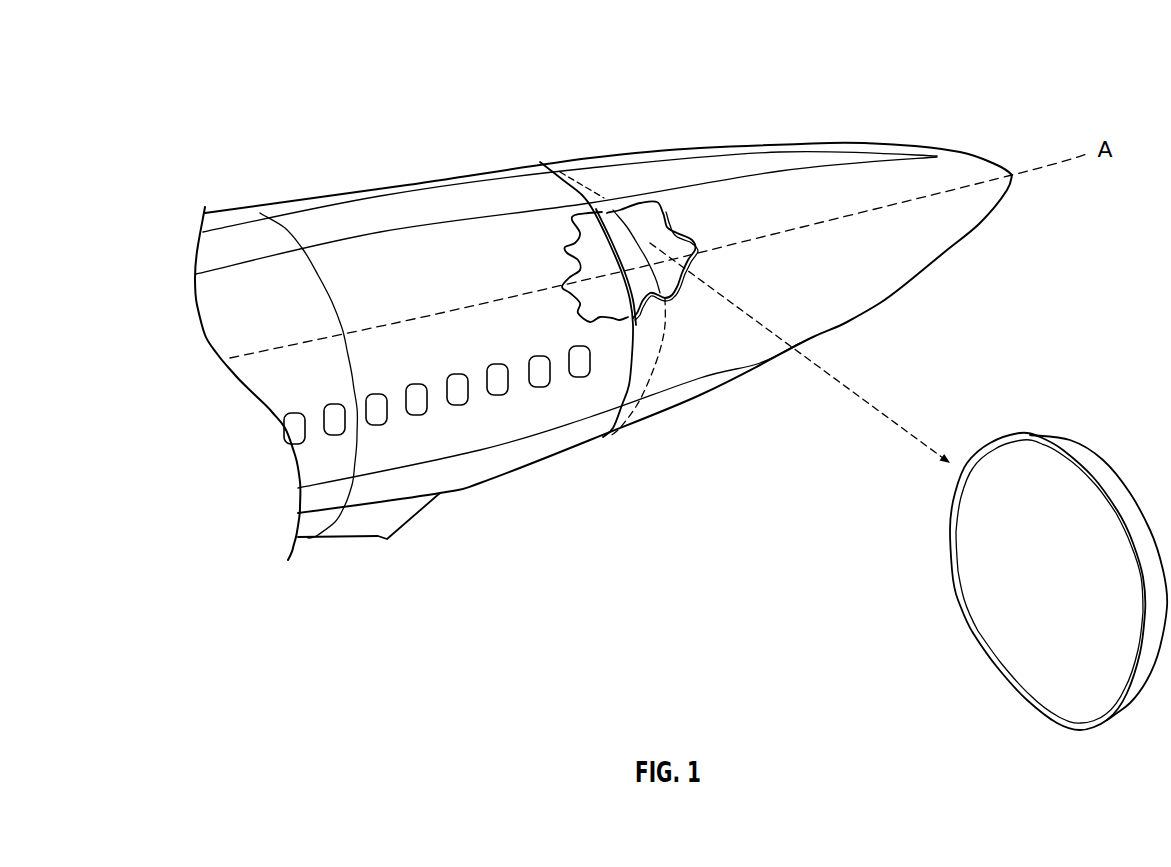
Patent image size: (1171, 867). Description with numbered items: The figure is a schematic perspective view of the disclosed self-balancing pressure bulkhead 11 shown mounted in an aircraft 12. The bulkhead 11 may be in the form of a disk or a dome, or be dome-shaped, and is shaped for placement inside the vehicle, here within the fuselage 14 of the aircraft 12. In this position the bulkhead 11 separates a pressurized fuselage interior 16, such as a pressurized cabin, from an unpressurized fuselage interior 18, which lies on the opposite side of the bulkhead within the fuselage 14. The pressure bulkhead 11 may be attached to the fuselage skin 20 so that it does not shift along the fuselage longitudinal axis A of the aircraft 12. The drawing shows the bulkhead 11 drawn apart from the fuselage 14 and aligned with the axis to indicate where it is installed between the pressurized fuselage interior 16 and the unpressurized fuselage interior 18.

The self-balancing pressure bulkhead 11 is at (1088, 424).
The aircraft 12 is at (1067, 73).
The fuselage 14 is at (935, 242).
The pressurized fuselage interior 16 is at (601, 305).
The unpressurized fuselage interior 18 is at (641, 213).
The fuselage skin 20 is at (578, 215).